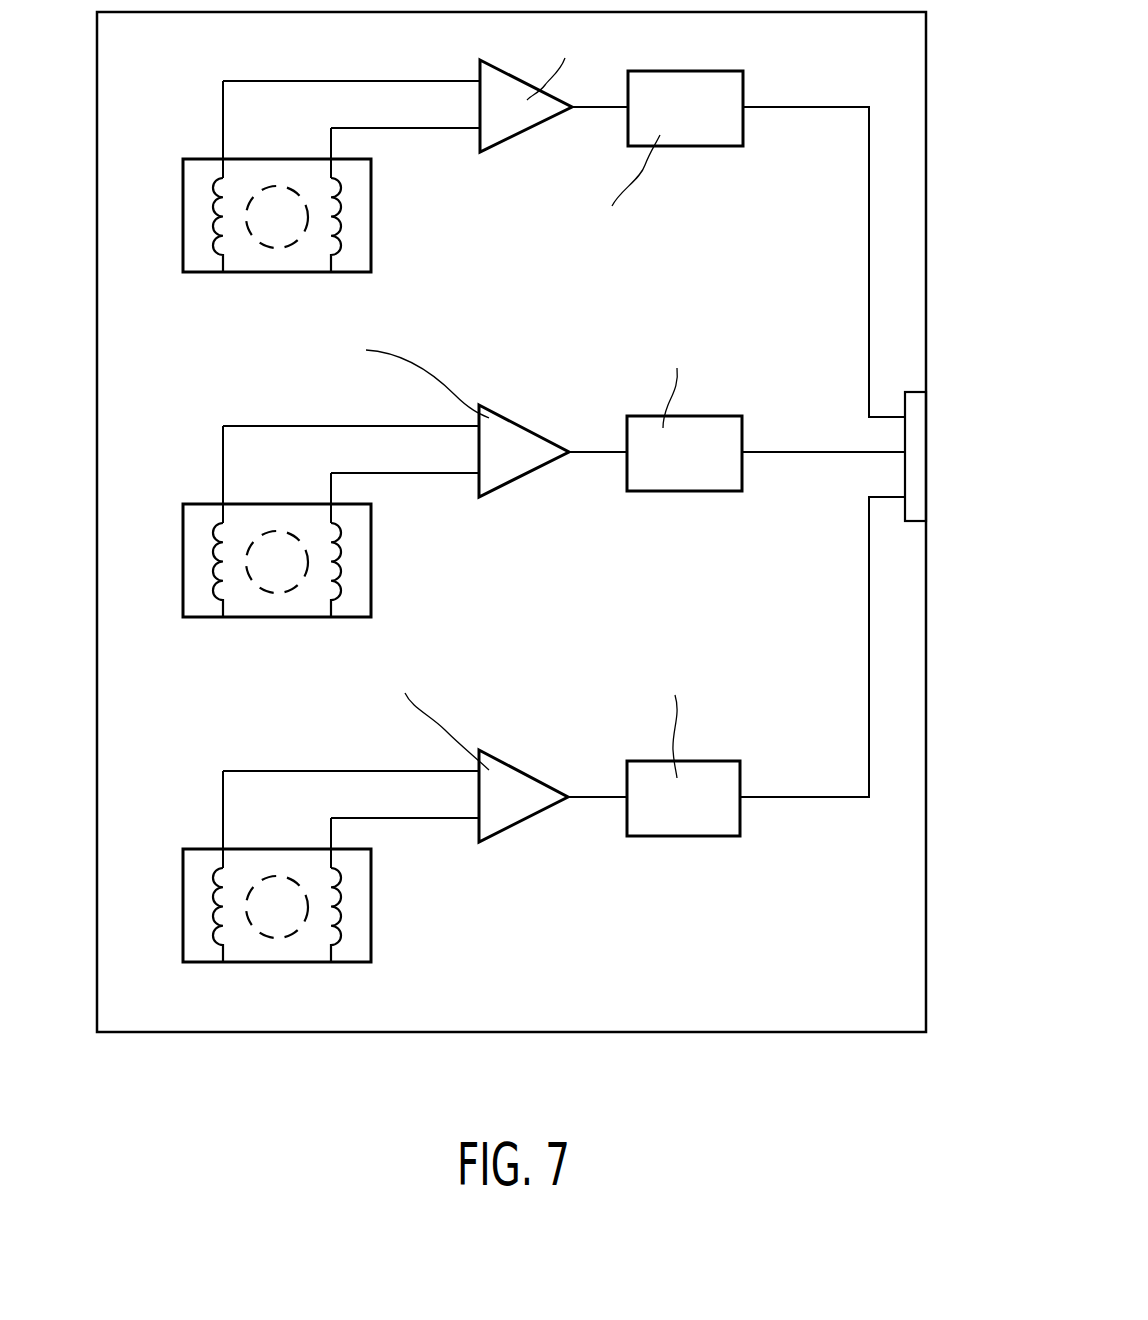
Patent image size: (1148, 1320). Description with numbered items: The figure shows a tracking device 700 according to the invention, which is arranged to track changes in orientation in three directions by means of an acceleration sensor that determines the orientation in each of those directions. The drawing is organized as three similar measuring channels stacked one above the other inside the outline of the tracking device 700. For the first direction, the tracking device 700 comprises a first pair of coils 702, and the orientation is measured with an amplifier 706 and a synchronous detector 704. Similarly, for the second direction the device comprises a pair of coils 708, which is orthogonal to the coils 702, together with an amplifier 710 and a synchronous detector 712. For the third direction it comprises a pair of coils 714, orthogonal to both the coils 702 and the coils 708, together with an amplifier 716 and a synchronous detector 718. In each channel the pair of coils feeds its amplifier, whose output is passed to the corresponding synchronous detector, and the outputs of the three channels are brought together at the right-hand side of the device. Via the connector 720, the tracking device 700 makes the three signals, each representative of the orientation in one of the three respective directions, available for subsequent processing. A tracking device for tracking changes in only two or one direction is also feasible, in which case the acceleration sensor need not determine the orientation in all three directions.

The tracking device 700 is at (870, 1034).
The first pair of coils 702 is at (372, 259).
The synchronous detector 704 is at (526, 120).
The amplifier 706 is at (698, 143).
The pair of coils 708 is at (372, 604).
The amplifier 710 is at (524, 468).
The synchronous detector 712 is at (697, 487).
The pair of coils 714 is at (372, 949).
The amplifier 716 is at (524, 812).
The synchronous detector 718 is at (695, 832).
The connector 720 is at (911, 524).